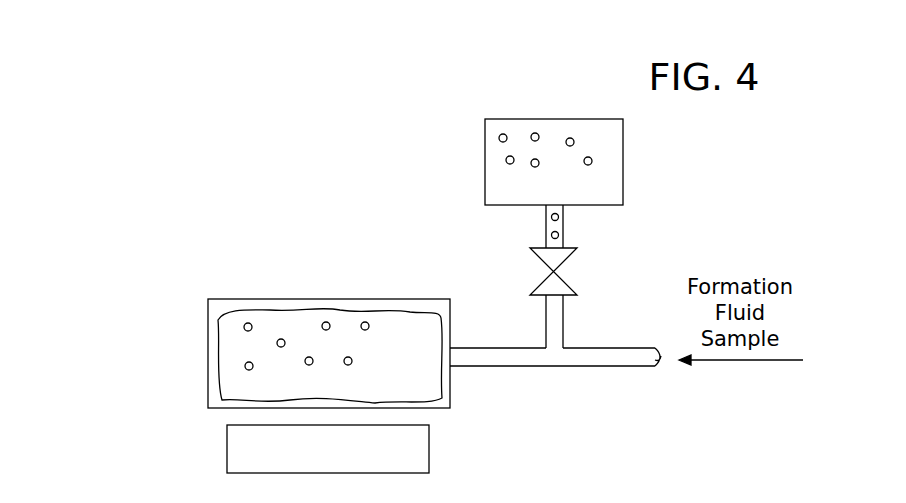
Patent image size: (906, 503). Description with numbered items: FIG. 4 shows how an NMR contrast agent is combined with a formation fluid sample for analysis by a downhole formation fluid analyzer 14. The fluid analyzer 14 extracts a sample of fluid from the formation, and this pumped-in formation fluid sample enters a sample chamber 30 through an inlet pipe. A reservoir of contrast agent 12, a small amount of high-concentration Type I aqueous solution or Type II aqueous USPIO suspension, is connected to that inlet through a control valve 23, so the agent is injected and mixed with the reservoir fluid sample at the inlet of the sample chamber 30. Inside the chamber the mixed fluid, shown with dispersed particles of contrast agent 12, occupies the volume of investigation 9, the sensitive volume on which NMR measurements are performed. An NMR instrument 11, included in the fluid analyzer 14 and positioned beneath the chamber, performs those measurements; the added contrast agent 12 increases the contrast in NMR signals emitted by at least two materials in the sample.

The formation fluid analyzer 14 is at (276, 151).
The contrast agent 12 is at (365, 322).
The sample chamber 30 is at (232, 299).
The volume of investigation 9 is at (240, 384).
The control valve 23 is at (568, 277).
The NMR instrument 11 is at (430, 442).